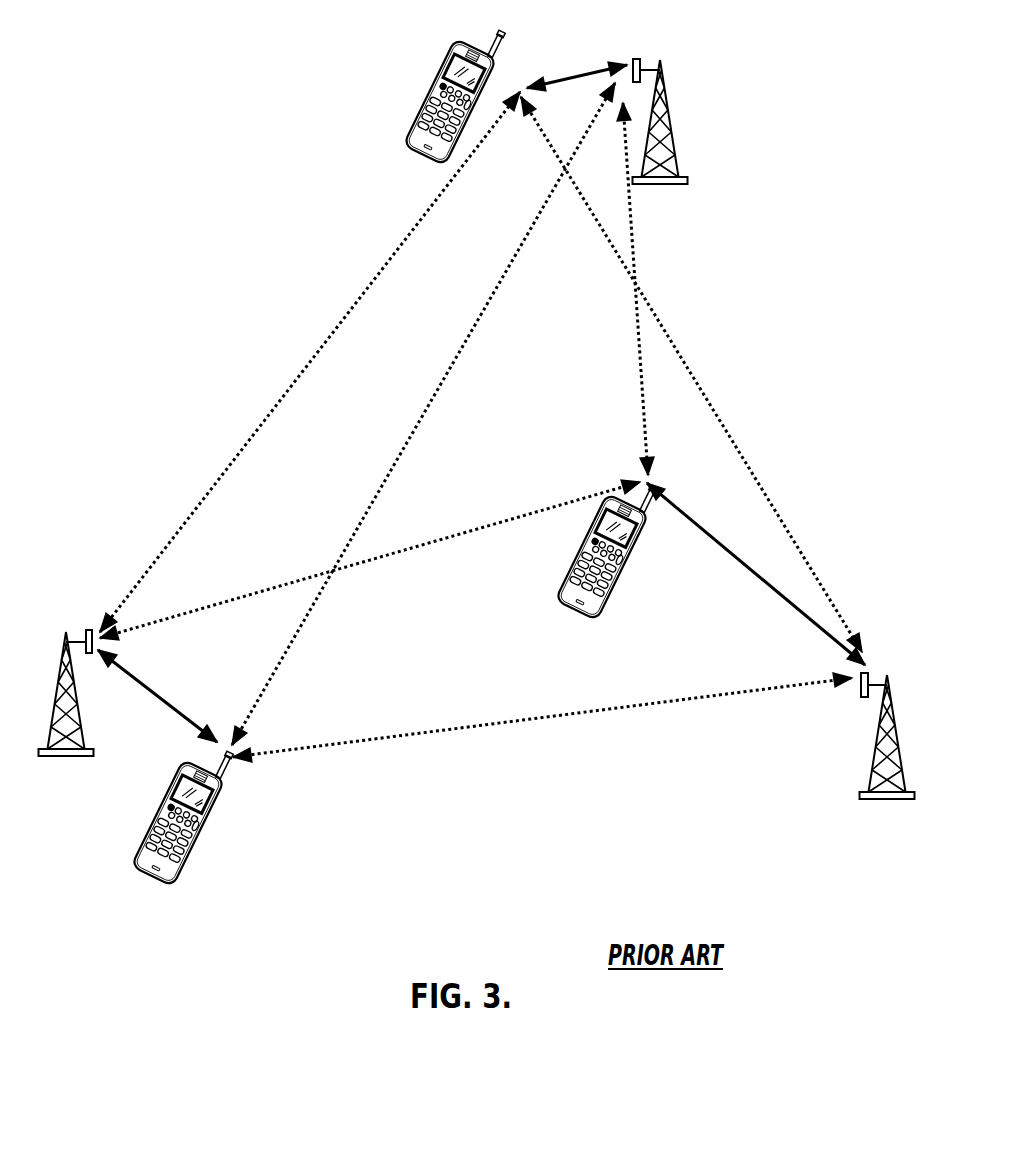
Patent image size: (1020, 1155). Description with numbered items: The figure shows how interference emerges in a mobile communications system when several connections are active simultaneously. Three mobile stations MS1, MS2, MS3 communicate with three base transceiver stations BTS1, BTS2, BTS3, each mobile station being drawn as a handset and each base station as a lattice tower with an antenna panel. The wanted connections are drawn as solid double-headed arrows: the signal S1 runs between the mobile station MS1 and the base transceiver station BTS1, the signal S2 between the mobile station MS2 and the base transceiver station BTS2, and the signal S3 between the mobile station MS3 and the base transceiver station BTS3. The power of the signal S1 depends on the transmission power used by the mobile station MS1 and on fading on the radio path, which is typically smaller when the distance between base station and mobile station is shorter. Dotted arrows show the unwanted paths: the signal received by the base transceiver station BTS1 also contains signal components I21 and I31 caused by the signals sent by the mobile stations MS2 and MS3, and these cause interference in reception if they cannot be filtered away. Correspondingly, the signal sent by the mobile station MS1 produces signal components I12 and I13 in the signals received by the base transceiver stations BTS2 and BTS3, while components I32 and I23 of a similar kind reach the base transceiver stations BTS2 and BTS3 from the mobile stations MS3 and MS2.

The mobile station MS1 is at (431, 90).
The mobile station MS2 is at (183, 825).
The mobile station MS3 is at (607, 560).
The base transceiver station BTS1 is at (692, 121).
The base transceiver station BTS2 is at (66, 713).
The base transceiver station BTS3 is at (886, 753).
The signal S1 is at (577, 64).
The signal S2 is at (157, 696).
The signal S3 is at (756, 574).
The signal component I12 is at (310, 362).
The signal component I21 is at (423, 414).
The signal component I31 is at (650, 289).
The signal component I13 is at (691, 374).
The signal component I32 is at (370, 560).
The signal component I23 is at (542, 717).